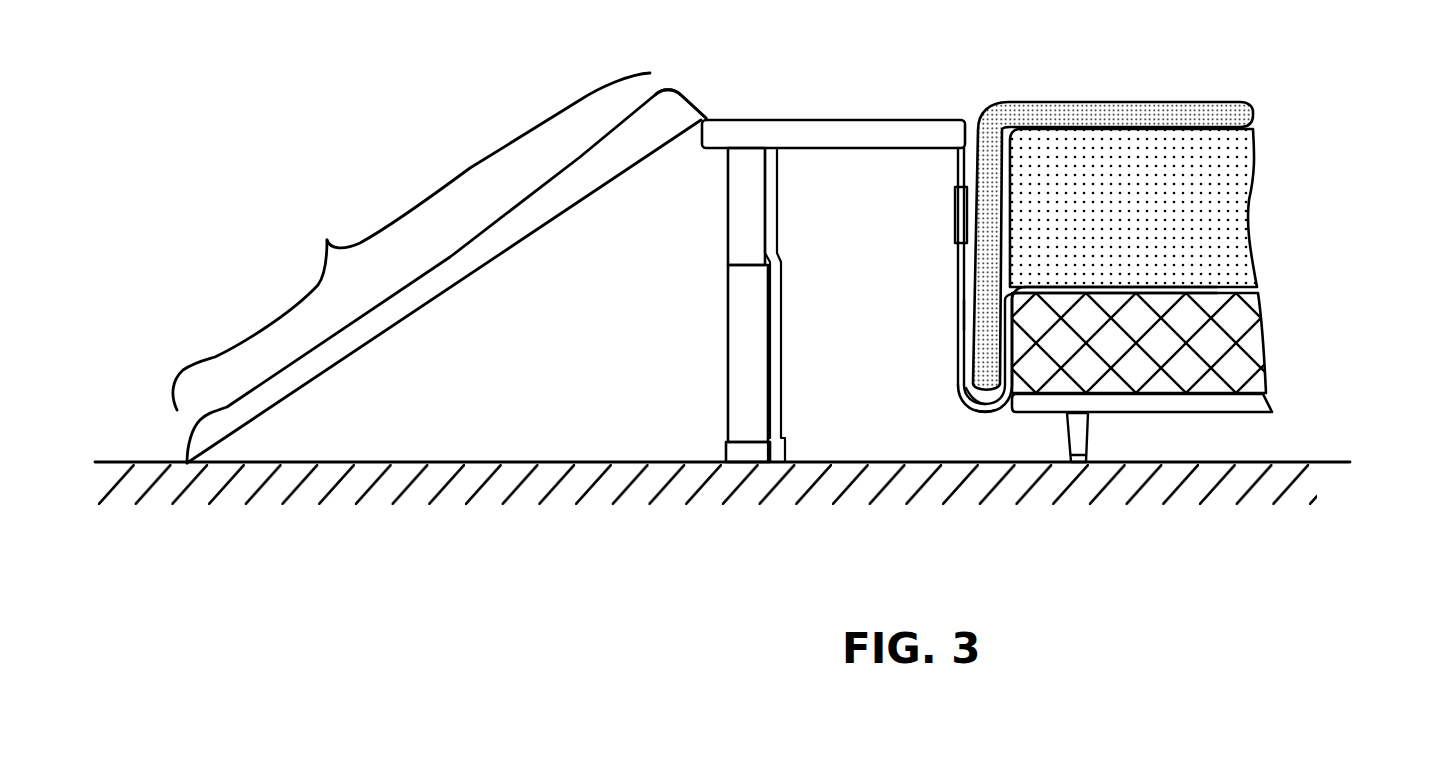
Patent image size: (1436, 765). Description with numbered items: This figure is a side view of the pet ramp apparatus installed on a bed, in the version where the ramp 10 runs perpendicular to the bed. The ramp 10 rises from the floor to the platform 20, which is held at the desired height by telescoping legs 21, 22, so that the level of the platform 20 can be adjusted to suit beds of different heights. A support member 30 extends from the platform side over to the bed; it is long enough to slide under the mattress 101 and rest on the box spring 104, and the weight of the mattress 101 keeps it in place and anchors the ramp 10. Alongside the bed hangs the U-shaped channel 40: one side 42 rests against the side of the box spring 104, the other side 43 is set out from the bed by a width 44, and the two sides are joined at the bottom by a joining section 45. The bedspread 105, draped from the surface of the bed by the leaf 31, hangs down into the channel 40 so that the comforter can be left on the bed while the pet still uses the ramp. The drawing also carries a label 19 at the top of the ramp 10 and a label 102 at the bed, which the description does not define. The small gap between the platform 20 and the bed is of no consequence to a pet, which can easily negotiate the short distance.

The pet ramp 10 is at (439, 268).
The upper end of slide 19 is at (710, 115).
The platform member 20 is at (932, 122).
The telescoping leg 21 is at (768, 198).
The telescoping leg 22 is at (770, 375).
The support member 30 is at (1197, 312).
The leaf 31 is at (953, 220).
The U-shaped channel 40 is at (991, 369).
The side of channel 42 is at (1013, 338).
The other side of channel 43 is at (956, 318).
The width 44 is at (972, 395).
The joining section 45 is at (993, 412).
The mattress 101 is at (1247, 198).
The furniture frame 102 is at (1253, 316).
The box spring 104 is at (1260, 348).
The bedspread 105 is at (1127, 103).